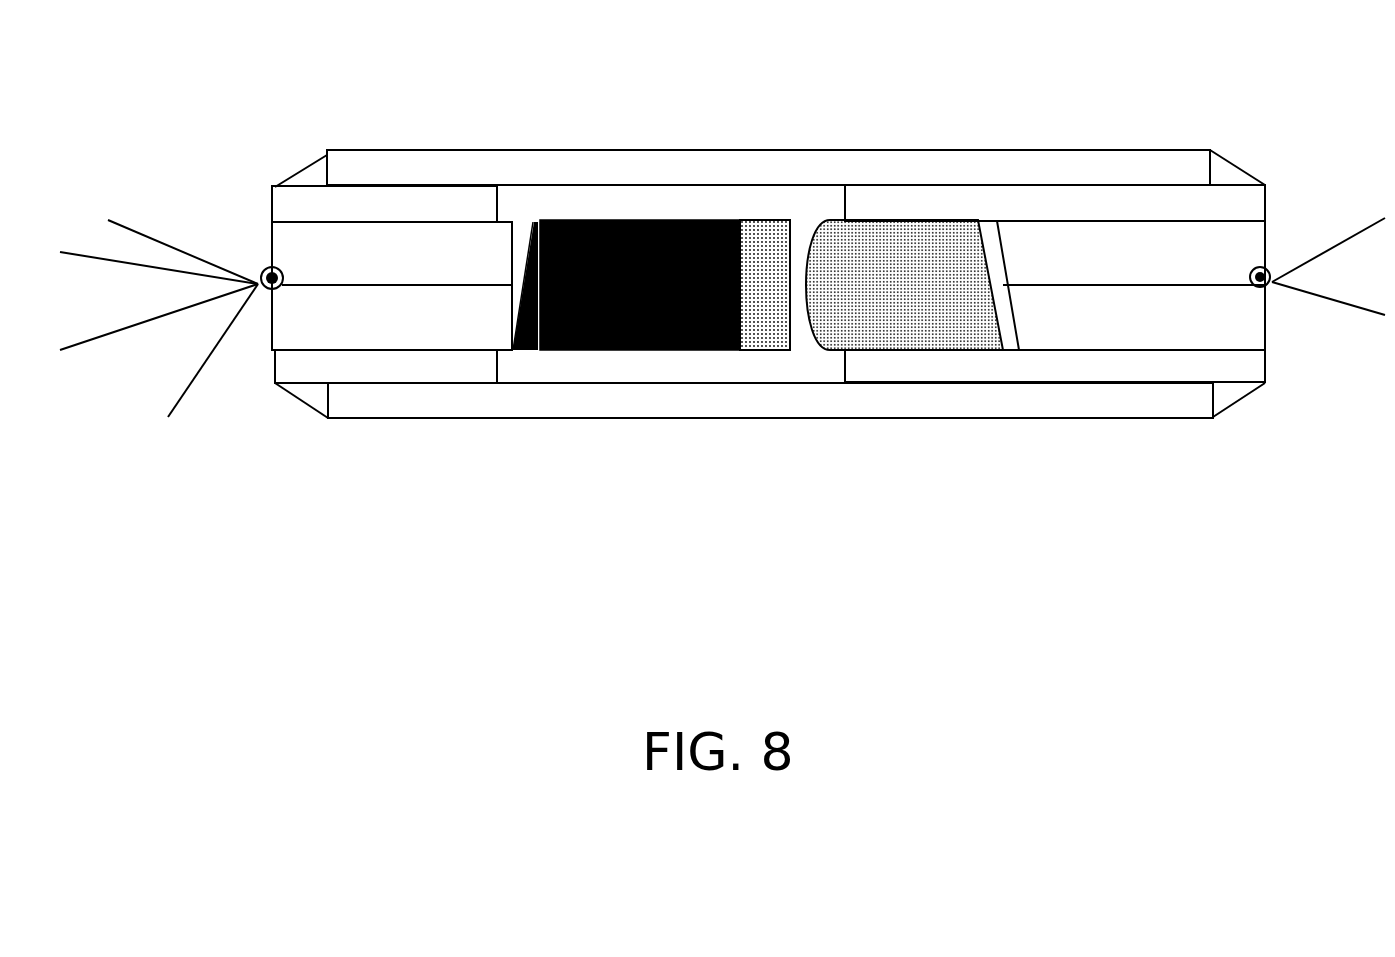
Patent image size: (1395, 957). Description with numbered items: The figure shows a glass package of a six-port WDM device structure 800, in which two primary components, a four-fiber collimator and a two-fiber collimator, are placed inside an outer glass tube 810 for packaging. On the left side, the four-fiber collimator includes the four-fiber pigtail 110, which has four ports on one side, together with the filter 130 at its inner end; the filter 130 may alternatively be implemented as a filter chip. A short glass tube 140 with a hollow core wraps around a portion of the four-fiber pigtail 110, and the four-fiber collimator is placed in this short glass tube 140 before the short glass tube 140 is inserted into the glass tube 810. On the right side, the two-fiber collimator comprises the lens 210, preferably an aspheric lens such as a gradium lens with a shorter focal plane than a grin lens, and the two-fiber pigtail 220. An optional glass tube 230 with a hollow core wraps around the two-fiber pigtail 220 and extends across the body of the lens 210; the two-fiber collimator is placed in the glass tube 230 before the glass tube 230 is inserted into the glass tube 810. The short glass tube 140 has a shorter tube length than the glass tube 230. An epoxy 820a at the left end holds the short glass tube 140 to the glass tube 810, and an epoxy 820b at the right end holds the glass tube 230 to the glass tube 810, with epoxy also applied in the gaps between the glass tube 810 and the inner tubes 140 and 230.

The 6-port WDM device structure 800 is at (178, 640).
The glass tube 810 is at (770, 284).
The epoxy 820a is at (309, 170).
The epoxy 820b is at (1235, 180).
The 4-fiber pigtail 110 is at (392, 286).
The short glass tube 140 is at (384, 284).
The filter 130 is at (765, 285).
The lens 210 is at (904, 285).
The 2-fiber pigtail 220 is at (1131, 285).
The glass tube 230 is at (1055, 283).